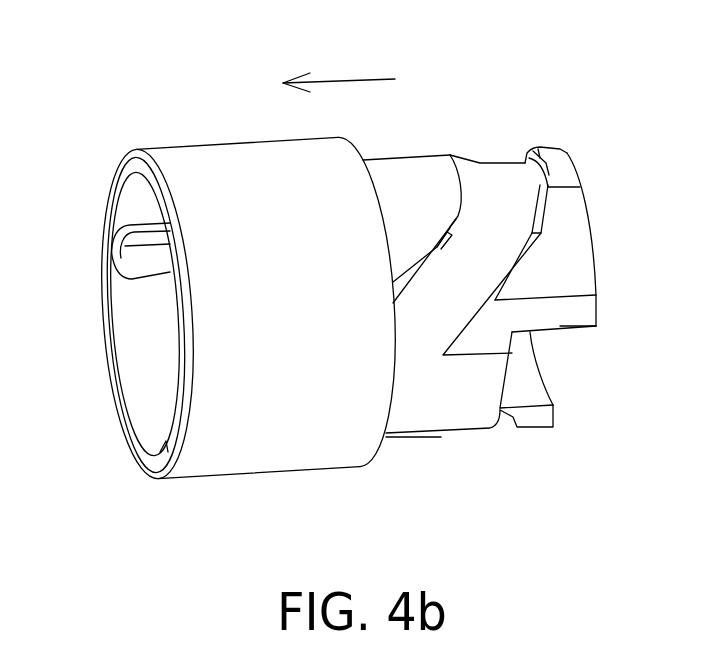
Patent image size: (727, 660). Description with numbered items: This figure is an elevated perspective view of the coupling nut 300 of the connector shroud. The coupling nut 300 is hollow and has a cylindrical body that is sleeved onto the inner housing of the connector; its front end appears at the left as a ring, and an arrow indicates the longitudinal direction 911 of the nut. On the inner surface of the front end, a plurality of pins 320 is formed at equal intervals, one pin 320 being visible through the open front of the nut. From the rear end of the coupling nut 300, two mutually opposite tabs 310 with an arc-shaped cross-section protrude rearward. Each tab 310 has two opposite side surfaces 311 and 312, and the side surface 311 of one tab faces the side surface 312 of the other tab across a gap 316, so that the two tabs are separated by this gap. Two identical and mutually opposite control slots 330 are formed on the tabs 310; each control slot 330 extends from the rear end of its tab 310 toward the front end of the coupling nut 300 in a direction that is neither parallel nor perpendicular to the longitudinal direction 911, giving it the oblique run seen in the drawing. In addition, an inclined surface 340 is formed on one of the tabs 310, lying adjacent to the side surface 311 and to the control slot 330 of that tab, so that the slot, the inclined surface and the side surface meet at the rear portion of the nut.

The coupling nut 300 is at (577, 78).
The tab 310 is at (575, 247).
The side surface 311 is at (578, 327).
The side surface 312 is at (532, 418).
The gap 316 is at (573, 352).
The pin 320 is at (138, 252).
The control slot 330 is at (523, 202).
The inclined surface 340 is at (580, 310).
The longitudinal direction 911 is at (339, 62).